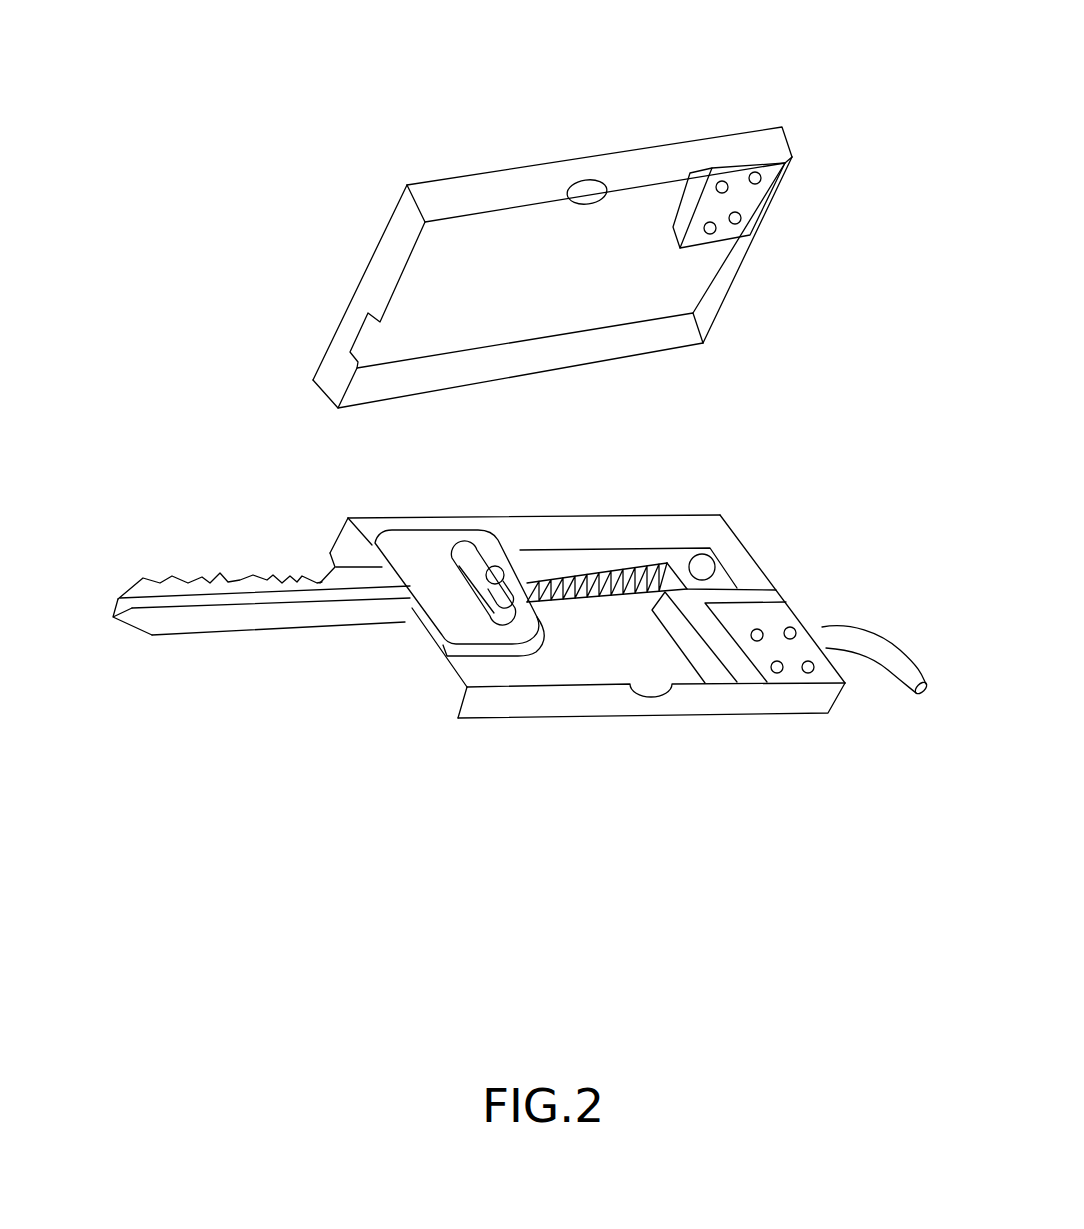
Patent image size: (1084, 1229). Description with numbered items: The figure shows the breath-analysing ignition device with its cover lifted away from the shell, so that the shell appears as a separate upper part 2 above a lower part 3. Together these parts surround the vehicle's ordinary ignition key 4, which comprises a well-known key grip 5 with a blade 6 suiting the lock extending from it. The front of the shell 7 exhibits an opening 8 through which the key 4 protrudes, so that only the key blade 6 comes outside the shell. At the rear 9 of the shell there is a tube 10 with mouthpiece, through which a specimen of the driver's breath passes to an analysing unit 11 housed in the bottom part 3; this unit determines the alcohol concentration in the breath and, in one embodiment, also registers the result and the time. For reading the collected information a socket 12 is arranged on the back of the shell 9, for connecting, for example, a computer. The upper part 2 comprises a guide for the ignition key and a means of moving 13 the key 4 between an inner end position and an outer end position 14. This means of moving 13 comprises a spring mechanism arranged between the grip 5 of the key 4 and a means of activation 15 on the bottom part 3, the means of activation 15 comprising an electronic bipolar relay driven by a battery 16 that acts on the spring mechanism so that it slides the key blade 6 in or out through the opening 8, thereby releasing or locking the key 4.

The upper part 2 is at (697, 148).
The lower part 3 is at (616, 712).
The ignition key 4 is at (259, 660).
The key grip 5 is at (427, 553).
The key blade 6 is at (226, 577).
The front of the shell 7 is at (383, 260).
The opening 8 is at (365, 342).
The rear of the shell 9 is at (776, 257).
The tube 10 is at (875, 640).
The analysing unit 11 is at (740, 672).
The socket 12 is at (803, 201).
The means of moving 13 is at (563, 568).
The outer end position 14 is at (147, 525).
The means of activation 15 is at (728, 578).
The battery 16 is at (703, 562).